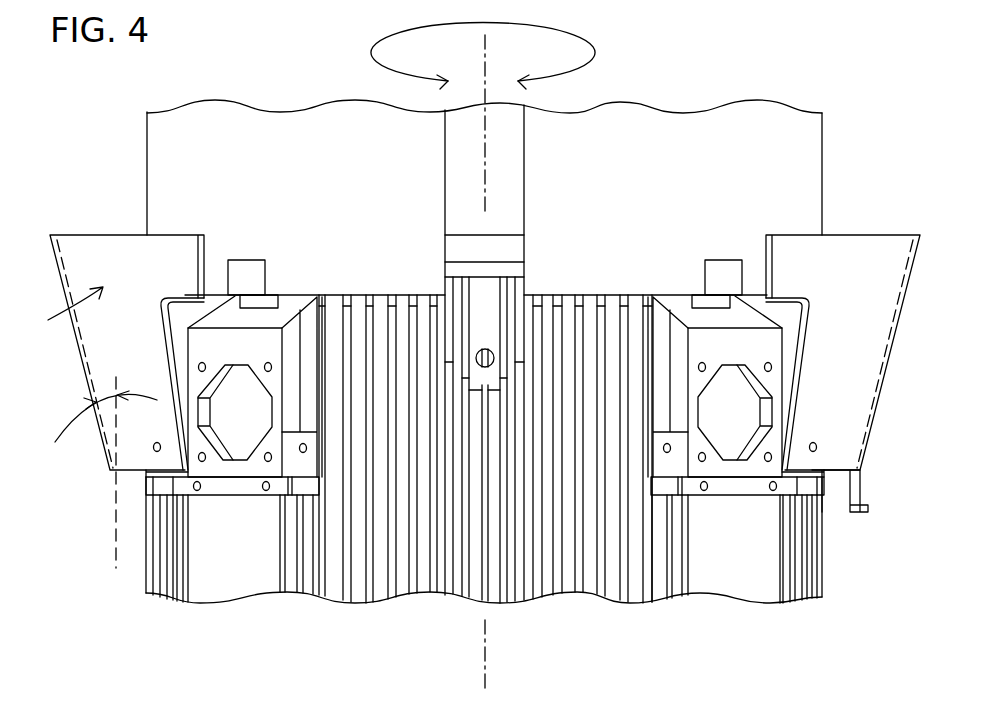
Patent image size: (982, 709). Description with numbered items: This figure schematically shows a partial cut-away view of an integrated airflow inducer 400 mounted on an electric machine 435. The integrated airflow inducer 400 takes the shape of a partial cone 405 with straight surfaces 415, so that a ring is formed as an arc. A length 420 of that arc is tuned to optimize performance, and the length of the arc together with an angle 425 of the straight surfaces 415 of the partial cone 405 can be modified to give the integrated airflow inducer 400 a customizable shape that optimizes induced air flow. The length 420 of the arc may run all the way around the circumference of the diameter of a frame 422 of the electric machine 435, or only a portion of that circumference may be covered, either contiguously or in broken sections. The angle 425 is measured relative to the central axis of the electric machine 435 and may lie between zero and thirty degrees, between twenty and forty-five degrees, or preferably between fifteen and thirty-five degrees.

The integrated airflow inducer 400 is at (873, 288).
The partial cone 405 is at (54, 311).
The straight surfaces 415 is at (66, 277).
The length of the arc 420 is at (598, 52).
The frame 422 is at (735, 562).
The angle 425 is at (103, 400).
The electric machine 435 is at (772, 47).